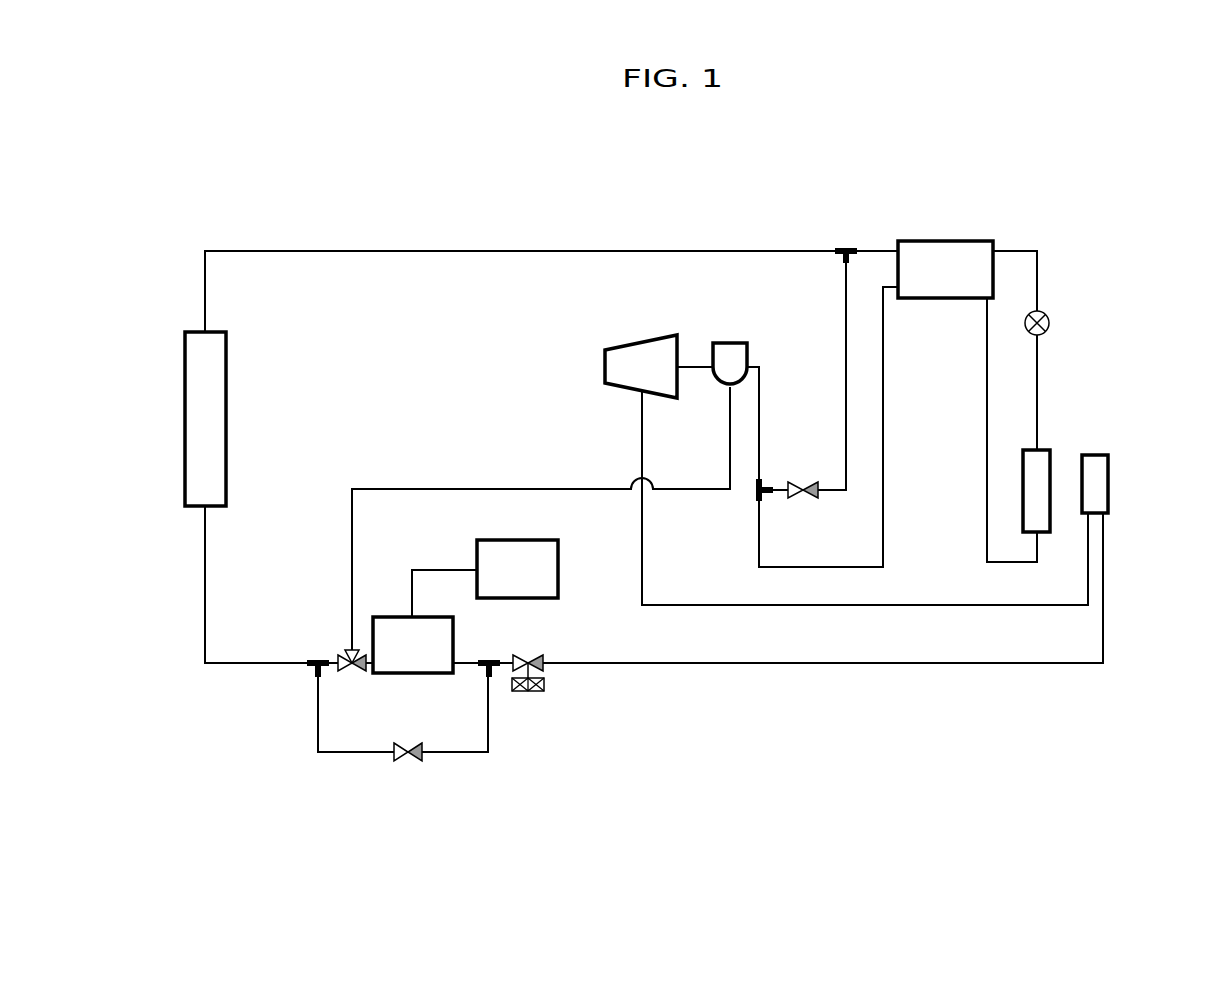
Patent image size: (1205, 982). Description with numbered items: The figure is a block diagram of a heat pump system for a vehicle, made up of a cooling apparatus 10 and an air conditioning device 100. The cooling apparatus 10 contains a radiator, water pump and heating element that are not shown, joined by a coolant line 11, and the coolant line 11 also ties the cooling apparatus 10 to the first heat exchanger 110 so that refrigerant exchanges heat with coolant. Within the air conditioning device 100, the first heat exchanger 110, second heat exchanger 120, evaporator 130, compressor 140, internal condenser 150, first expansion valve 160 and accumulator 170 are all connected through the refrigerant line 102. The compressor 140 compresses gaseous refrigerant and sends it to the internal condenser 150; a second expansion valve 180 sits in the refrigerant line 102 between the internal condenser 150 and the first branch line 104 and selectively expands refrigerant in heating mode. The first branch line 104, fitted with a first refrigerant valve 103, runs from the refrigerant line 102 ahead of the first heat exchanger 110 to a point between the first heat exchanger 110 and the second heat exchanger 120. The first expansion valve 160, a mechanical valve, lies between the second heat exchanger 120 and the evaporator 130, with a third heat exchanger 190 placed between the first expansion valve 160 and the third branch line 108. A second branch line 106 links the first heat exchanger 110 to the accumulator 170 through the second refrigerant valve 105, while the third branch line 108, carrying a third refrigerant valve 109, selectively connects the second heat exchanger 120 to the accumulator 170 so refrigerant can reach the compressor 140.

The air conditioning device 100 is at (1044, 192).
The refrigerant line 102 is at (479, 250).
The cooling apparatus 10 is at (558, 568).
The coolant line 11 is at (436, 570).
The first refrigerant valve 103 is at (415, 762).
The first branch line 104 is at (345, 754).
The second refrigerant valve 105 is at (345, 653).
The second branch line 106 is at (400, 489).
The third branch line 108 is at (845, 374).
The third refrigerant valve 109 is at (805, 500).
The first heat exchanger 110 is at (412, 675).
The second heat exchanger 120 is at (226, 417).
The evaporator 130 is at (1045, 450).
The compressor 140 is at (640, 333).
The internal condenser 150 is at (1108, 472).
The first expansion valve 160 is at (1050, 322).
The accumulator 170 is at (730, 342).
The second expansion valve 180 is at (546, 688).
The third heat exchanger 190 is at (945, 241).